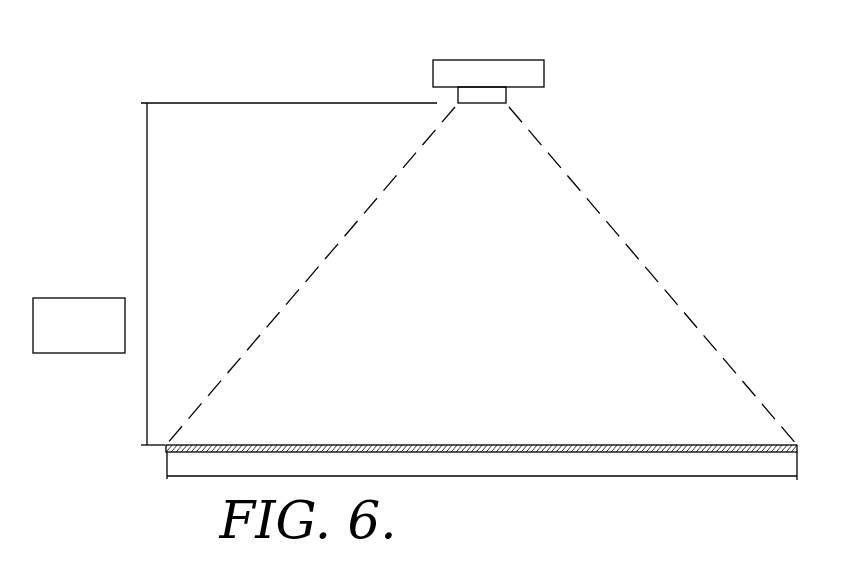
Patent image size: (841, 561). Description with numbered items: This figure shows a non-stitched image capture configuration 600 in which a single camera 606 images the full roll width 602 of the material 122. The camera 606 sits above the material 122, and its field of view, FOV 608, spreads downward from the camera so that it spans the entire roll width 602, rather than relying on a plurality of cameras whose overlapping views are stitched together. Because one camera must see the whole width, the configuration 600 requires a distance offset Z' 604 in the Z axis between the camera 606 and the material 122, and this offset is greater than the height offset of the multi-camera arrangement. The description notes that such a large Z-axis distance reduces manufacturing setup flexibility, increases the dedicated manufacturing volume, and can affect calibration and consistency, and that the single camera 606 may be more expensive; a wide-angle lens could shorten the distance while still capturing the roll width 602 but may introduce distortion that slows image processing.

The non-stitched image capture configuration 600 is at (724, 81).
The single camera 606 is at (552, 72).
The field of view 608 is at (487, 286).
The distance offset Z' 604 is at (98, 245).
The material 122 is at (602, 446).
The roll width 602 is at (504, 510).